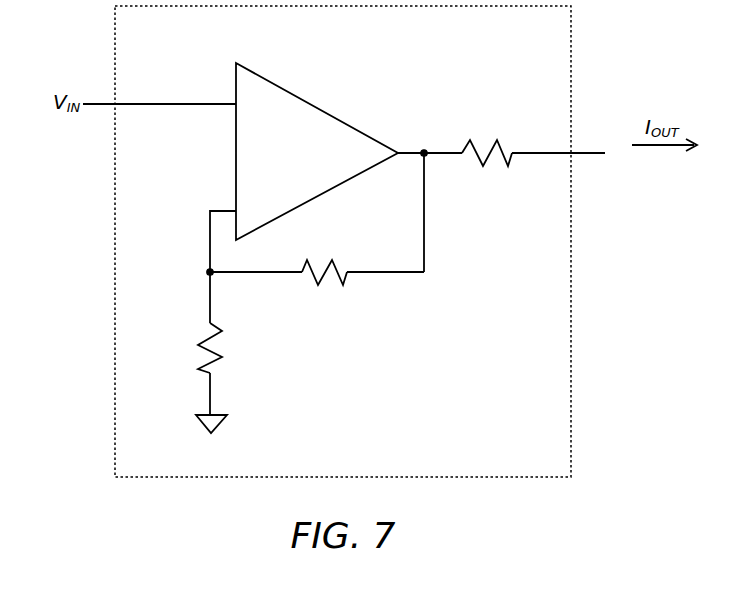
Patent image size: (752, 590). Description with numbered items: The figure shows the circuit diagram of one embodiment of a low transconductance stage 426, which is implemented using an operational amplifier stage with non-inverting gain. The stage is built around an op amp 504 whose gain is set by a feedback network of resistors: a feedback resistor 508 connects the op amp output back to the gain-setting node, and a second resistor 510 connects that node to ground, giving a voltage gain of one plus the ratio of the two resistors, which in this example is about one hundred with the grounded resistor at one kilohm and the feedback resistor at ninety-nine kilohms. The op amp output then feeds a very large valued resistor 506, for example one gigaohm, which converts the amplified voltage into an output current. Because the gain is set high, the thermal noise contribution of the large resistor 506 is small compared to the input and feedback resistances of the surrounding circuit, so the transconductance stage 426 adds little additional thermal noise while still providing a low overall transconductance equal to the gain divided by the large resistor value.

The transconductance stage 426 is at (504, 426).
The op amp 504 is at (307, 100).
The resistor 506 is at (502, 162).
The resistor 508 is at (335, 282).
The resistor 510 is at (218, 358).